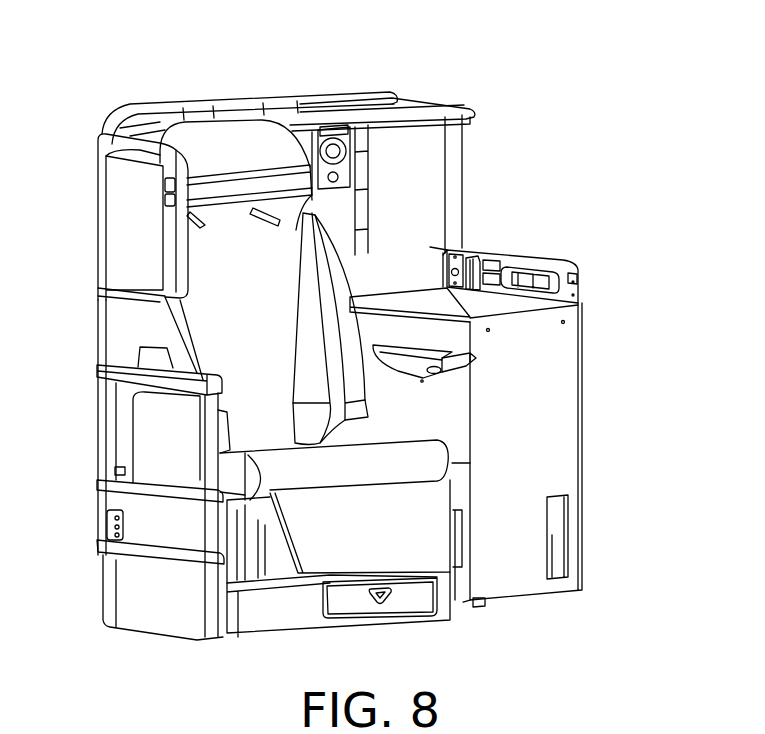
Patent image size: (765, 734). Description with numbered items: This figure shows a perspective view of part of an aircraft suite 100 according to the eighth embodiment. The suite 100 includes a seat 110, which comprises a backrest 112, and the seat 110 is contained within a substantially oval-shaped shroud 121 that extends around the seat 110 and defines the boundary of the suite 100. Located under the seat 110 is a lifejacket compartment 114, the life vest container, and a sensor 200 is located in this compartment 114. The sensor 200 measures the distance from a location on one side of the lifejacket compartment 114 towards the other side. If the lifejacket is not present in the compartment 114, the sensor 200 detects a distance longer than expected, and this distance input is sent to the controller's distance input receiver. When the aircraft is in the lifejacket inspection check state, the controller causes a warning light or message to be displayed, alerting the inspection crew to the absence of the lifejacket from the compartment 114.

The aircraft suite 100 is at (603, 162).
The seat 110 is at (262, 286).
The backrest 112 is at (327, 282).
The lifejacket compartment 114 is at (358, 600).
The shroud 121 is at (122, 216).
The sensor 200 is at (421, 603).